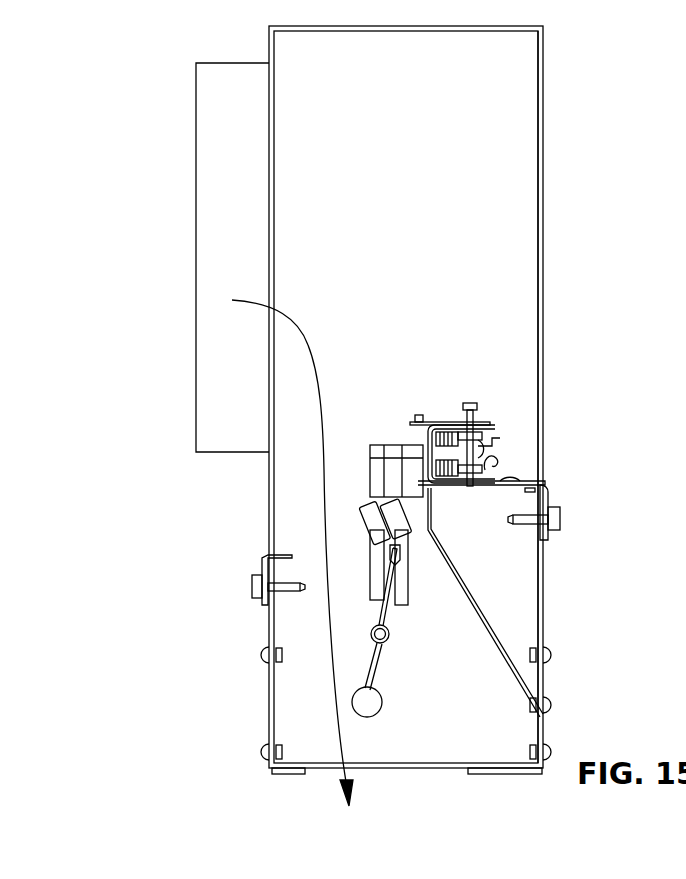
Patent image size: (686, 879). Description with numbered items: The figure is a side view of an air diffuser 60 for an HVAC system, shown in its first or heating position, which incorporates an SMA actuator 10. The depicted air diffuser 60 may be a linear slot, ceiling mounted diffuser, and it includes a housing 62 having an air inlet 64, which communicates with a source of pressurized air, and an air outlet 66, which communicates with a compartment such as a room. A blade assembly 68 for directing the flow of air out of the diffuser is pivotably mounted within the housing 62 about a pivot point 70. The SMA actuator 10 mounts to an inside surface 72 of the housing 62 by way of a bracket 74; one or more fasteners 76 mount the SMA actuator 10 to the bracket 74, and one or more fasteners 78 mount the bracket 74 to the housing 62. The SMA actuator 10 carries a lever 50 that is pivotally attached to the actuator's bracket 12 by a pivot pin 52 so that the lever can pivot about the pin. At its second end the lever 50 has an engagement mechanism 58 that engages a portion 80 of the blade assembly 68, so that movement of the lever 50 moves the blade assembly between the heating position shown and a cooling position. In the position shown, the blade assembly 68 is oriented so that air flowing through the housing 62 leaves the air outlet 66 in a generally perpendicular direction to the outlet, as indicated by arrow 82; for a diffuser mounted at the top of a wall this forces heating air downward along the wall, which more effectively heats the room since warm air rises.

The SMA actuator 10 is at (428, 296).
The bracket 12 is at (445, 424).
The lever 50 is at (390, 448).
The pivot pin 52 is at (419, 414).
The engagement mechanism 58 is at (407, 595).
The air diffuser 60 is at (576, 140).
The housing 62 is at (546, 234).
The air inlet 64 is at (196, 278).
The air outlet 66 is at (305, 788).
The blade assembly 68 is at (368, 672).
The pivot point 70 is at (383, 634).
The inside surface 72 is at (522, 407).
The bracket 74 is at (484, 606).
The fasteners 76 is at (515, 475).
The fasteners 78 is at (561, 520).
The portion of blade assembly 80 is at (398, 557).
The arrow 82 is at (303, 336).